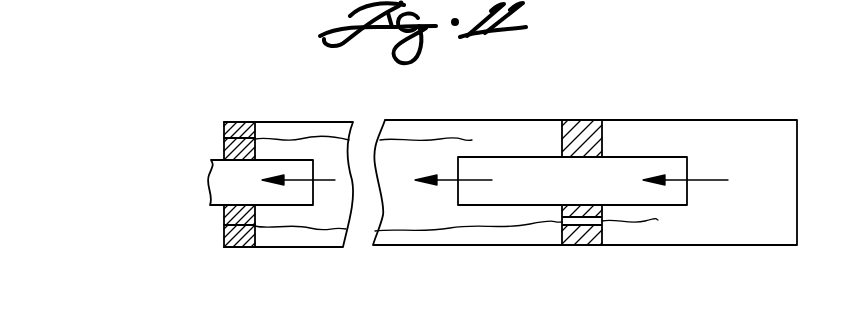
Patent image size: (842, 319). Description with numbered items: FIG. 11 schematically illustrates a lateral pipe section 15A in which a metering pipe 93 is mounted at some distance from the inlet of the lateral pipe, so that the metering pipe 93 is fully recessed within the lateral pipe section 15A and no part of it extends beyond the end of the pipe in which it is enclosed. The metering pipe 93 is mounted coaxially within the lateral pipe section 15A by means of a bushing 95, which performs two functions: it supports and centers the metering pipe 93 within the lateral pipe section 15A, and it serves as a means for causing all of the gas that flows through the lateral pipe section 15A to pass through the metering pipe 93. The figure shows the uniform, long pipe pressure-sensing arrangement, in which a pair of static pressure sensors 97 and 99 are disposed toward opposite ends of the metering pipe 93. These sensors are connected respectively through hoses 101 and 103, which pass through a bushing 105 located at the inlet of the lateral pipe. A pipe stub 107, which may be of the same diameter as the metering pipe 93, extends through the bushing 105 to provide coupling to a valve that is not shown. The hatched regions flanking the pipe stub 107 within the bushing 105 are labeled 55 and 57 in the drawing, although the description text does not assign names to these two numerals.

The lateral pipe section 15A is at (772, 120).
The metering pipe 93 is at (647, 157).
The bushing 95 is at (558, 136).
The static pressure sensor 97 is at (472, 167).
The static pressure sensor 99 is at (658, 197).
The hose 101 is at (315, 140).
The hose 103 is at (442, 229).
The bushing 105 is at (226, 131).
The upper bearing 55 is at (233, 136).
The pipe stub 107 is at (218, 207).
The lower bearing 57 is at (240, 241).